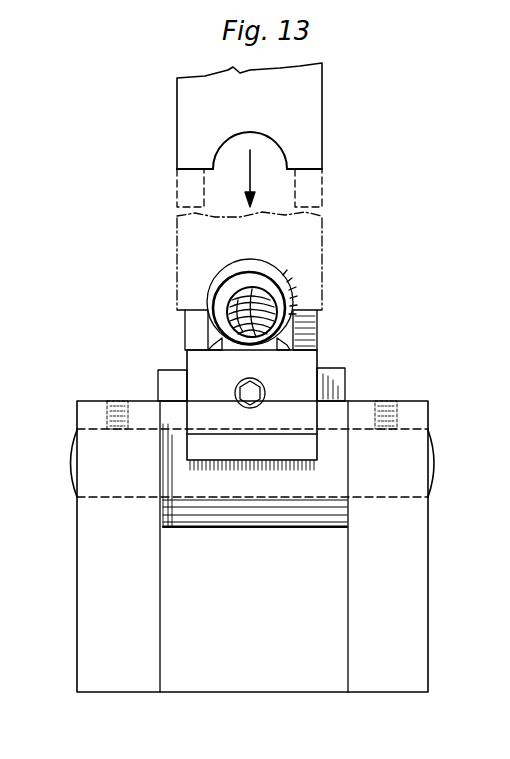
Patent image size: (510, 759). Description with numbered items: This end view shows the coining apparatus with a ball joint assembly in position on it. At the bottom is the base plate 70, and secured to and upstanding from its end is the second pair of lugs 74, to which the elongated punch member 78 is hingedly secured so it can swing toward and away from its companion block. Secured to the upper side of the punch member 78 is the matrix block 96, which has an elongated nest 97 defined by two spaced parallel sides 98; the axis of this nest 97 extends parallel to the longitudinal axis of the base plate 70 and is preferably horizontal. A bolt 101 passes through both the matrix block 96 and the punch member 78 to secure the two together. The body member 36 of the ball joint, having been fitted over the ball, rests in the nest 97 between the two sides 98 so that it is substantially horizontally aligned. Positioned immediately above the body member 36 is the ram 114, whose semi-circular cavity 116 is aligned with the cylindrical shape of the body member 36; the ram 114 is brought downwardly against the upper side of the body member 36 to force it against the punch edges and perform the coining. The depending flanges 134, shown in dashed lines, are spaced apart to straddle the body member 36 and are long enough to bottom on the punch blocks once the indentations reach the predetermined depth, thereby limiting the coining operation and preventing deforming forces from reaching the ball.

The ram 114 is at (322, 122).
The semi-circular cavity 116 is at (214, 148).
The depending flanges 134 is at (177, 183).
The body member 36 is at (283, 272).
The nest 97 is at (262, 347).
The spaced parallel sides 98 is at (200, 332).
The matrix block 96 is at (296, 371).
The bolt 101 is at (250, 393).
The base plate 70 is at (253, 613).
The second pair of lugs 74 is at (90, 603).
The punch member 78 is at (266, 490).